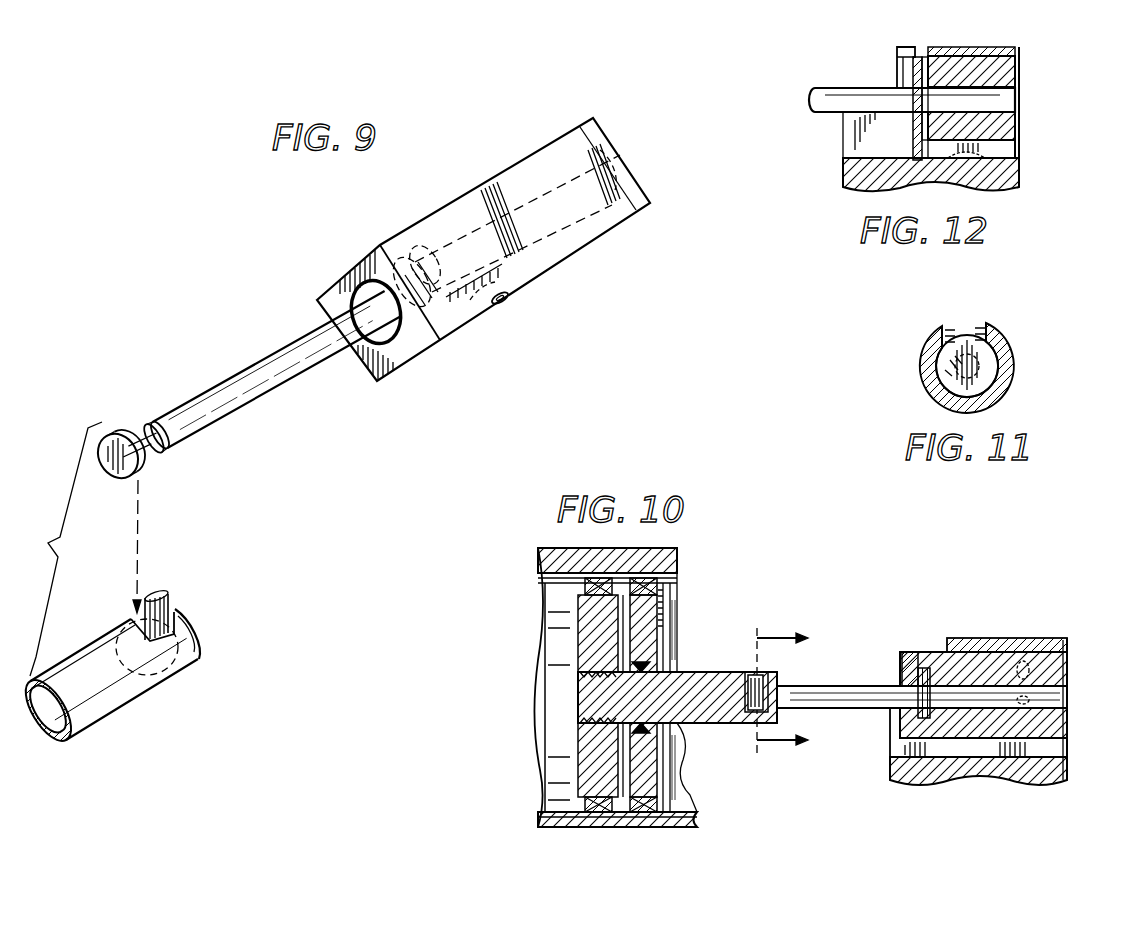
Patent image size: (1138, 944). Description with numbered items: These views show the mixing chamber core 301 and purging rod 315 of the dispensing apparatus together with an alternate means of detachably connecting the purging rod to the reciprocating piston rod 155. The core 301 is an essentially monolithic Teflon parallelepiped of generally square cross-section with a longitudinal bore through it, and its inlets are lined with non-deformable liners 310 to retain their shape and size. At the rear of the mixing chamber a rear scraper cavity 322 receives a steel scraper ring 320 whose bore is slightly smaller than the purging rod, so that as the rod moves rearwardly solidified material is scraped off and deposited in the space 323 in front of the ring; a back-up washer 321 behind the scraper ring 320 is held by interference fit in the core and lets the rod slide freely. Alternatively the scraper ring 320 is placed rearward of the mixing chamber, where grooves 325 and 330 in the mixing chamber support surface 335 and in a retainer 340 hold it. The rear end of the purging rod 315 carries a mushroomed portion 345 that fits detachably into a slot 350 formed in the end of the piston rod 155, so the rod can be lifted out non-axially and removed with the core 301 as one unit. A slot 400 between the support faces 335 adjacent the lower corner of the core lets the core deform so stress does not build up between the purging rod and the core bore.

In FIG. 9, the piston rod 155 is at (120, 700).
In FIG. 10, the piston rod 155 is at (697, 672).
In FIG. 11, the piston rod 155 is at (1011, 389).
In FIG. 9, the mixing chamber core 301 is at (442, 212).
In FIG. 10, the mixing chamber core 301 is at (1067, 660).
In FIG. 9, the non-deformable liner 310 is at (512, 293).
In FIG. 10, the non-deformable liner 310 is at (1023, 648).
In FIG. 9, the purging rod 315 is at (243, 414).
In FIG. 10, the purging rod 315 is at (836, 687).
In FIG. 11, the purging rod 315 is at (913, 367).
In FIG. 12, the purging rod 315 is at (912, 100).
In FIG. 9, the scraper ring 320 is at (383, 240).
In FIG. 10, the scraper ring 320 is at (932, 668).
In FIG. 12, the scraper ring 320 is at (912, 62).
In FIG. 9, the back-up washer 321 is at (419, 350).
In FIG. 10, the back-up washer 321 is at (907, 652).
In FIG. 9, the rear scraper cavity 322 is at (352, 285).
In FIG. 10, the rear scraper cavity 322 is at (888, 713).
In FIG. 9, the space 323 is at (478, 318).
In FIG. 10, the space 323 is at (945, 713).
In FIG. 12, the groove 325 is at (893, 187).
In FIG. 12, the groove 330 is at (912, 50).
In FIG. 12, the mixing chamber support surface 335 is at (987, 163).
In FIG. 10, the retainer 340 is at (1005, 650).
In FIG. 12, the retainer 340 is at (1023, 50).
In FIG. 9, the mushroomed portion 345 is at (121, 432).
In FIG. 10, the mushroomed portion 345 is at (760, 712).
In FIG. 11, the mushroomed portion 345 is at (997, 352).
In FIG. 9, the slot 350 is at (166, 606).
In FIG. 10, the slot 350 is at (778, 671).
In FIG. 11, the slot 350 is at (947, 323).
In FIG. 10, the slot 400 is at (1063, 753).
In FIG. 12, the slot 400 is at (1020, 157).